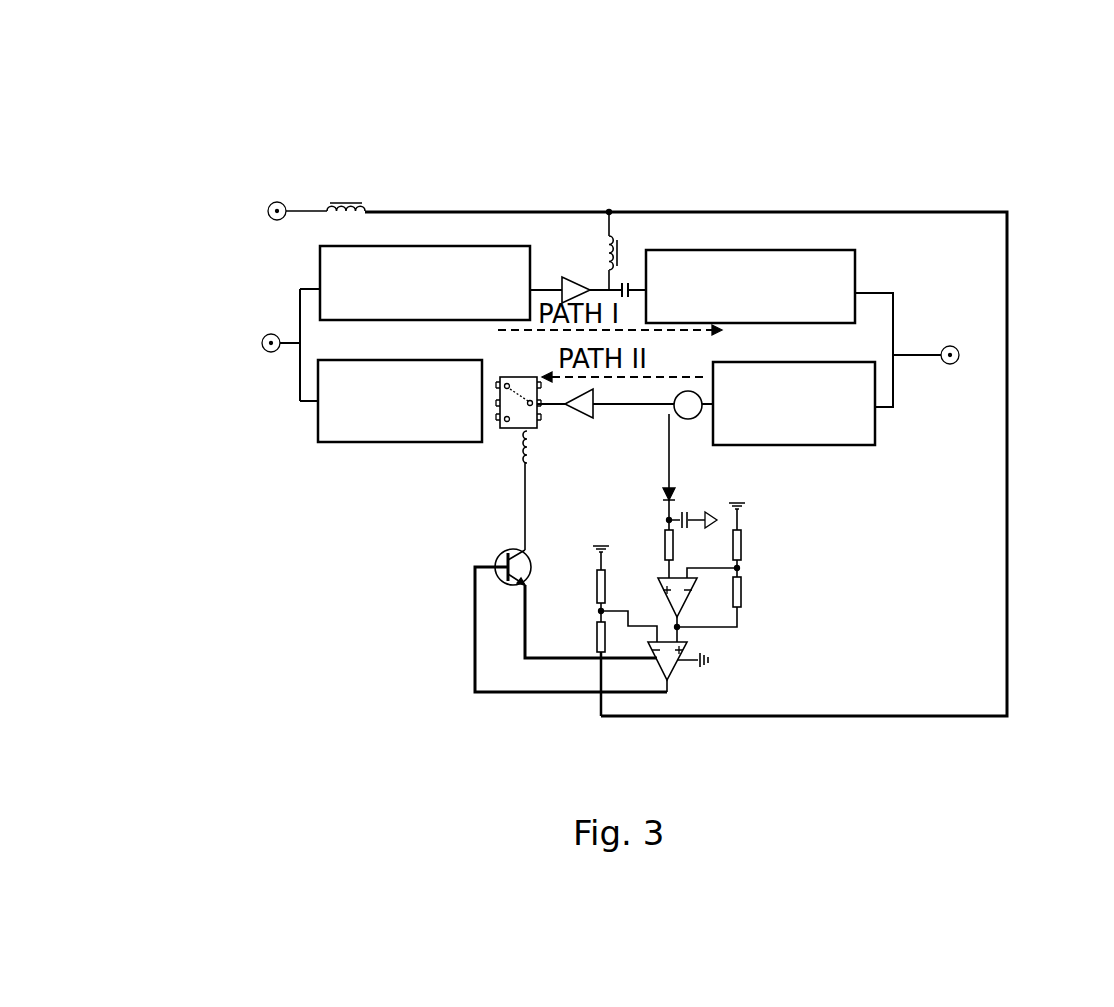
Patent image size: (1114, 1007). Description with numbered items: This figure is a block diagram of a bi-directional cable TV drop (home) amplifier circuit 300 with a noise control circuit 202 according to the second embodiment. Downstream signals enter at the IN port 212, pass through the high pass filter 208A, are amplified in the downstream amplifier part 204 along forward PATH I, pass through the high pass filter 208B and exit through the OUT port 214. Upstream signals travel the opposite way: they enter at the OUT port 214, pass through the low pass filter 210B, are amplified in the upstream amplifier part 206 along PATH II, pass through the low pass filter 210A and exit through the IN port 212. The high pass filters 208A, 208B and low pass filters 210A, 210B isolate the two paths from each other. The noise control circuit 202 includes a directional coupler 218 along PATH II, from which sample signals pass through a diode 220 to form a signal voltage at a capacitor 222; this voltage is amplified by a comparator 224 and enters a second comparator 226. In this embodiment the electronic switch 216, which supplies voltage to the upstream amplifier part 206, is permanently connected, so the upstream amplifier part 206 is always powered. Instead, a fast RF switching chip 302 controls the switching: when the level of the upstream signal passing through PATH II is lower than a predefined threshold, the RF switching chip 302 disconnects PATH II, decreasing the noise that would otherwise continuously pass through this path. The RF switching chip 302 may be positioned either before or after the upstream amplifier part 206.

The bi-directional cable TV drop (home) amplifier circuit 300 is at (625, 118).
The noise control circuit 202 is at (420, 597).
The downstream amplifier part 204 is at (561, 277).
The upstream amplifier part 206 is at (593, 417).
The high pass filter 208A is at (427, 246).
The high pass filter 208B is at (760, 258).
The low pass filter 210A is at (388, 443).
The low pass filter 210B is at (800, 437).
The IN port 212 is at (264, 338).
The OUT port 214 is at (958, 348).
The electronic switch 216 is at (519, 553).
The directional coupler 218 is at (702, 402).
The diode 220 is at (663, 494).
The capacitor 222 is at (687, 515).
The comparator 224 is at (687, 590).
The comparator 226 is at (673, 660).
The fast RF switching chip 302 is at (502, 430).